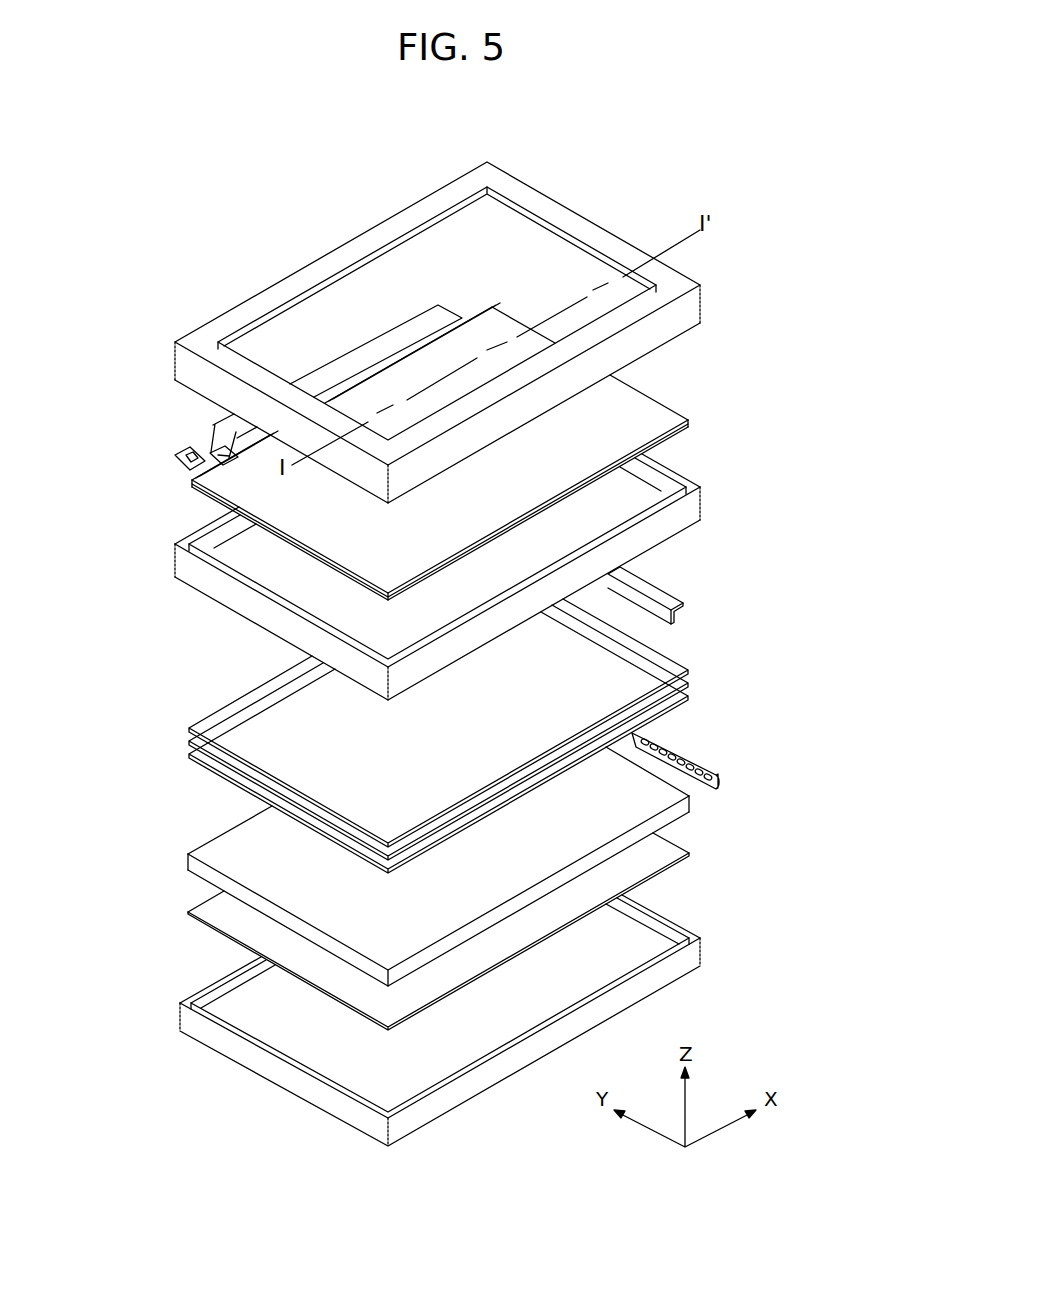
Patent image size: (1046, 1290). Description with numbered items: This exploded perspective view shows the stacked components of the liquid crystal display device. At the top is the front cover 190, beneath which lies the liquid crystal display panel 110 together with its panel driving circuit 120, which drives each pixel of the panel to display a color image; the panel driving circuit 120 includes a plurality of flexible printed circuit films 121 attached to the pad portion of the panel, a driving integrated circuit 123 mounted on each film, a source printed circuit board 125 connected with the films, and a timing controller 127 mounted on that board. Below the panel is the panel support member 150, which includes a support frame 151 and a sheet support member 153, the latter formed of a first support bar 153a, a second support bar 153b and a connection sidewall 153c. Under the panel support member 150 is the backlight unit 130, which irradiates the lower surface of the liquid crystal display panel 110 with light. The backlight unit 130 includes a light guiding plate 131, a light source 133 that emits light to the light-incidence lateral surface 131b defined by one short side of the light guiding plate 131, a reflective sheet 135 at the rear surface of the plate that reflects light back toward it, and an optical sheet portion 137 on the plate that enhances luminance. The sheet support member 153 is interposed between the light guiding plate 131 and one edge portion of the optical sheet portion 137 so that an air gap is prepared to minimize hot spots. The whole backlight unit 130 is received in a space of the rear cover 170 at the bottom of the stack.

The liquid crystal display panel 110 is at (692, 402).
The panel driving circuit 120 is at (271, 393).
The flexible printed circuit films 121 is at (223, 433).
The driving integrated circuit 123 is at (210, 432).
The source printed circuit board 125 is at (212, 452).
The timing controller 127 is at (153, 465).
The backlight unit 130 is at (515, 814).
The light guiding plate 131 is at (487, 866).
The light-incidence lateral surface 131b is at (692, 799).
The light source 133 is at (700, 746).
The reflective sheet 135 is at (484, 931).
The optical sheet portion 137 is at (688, 672).
The panel support member 150 is at (507, 569).
The support frame 151 is at (699, 472).
The sheet support member 153 is at (693, 601).
The first support bar 153a is at (647, 582).
The second support bar 153b is at (672, 621).
The connection sidewall 153c is at (683, 613).
The rear cover 170 is at (701, 950).
The front cover 190 is at (702, 298).